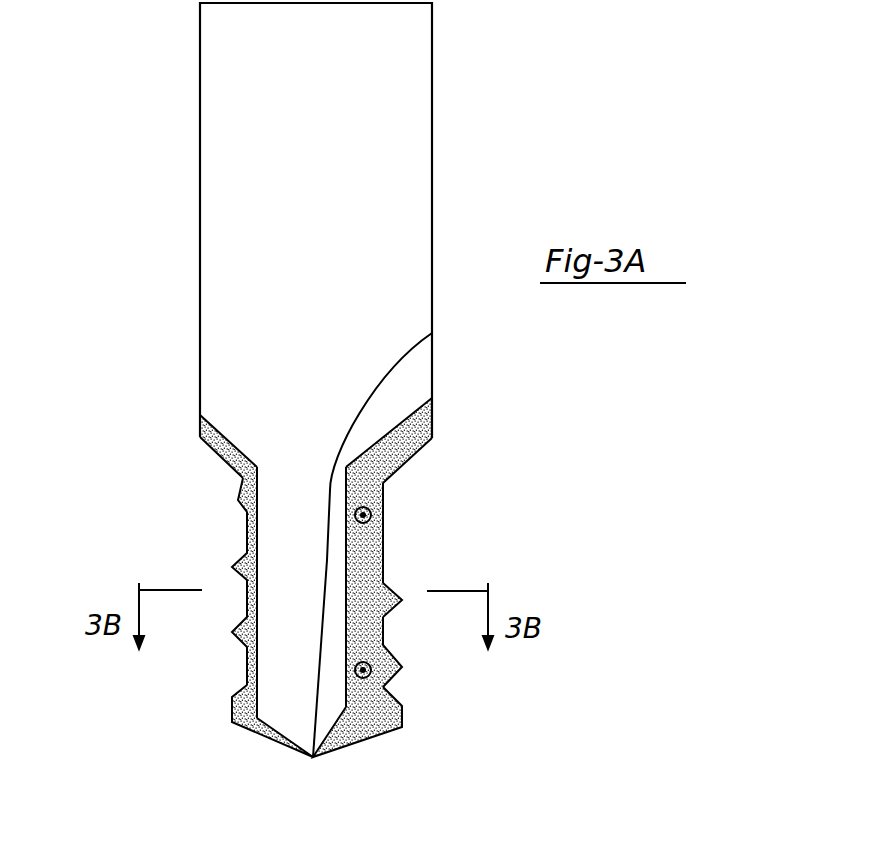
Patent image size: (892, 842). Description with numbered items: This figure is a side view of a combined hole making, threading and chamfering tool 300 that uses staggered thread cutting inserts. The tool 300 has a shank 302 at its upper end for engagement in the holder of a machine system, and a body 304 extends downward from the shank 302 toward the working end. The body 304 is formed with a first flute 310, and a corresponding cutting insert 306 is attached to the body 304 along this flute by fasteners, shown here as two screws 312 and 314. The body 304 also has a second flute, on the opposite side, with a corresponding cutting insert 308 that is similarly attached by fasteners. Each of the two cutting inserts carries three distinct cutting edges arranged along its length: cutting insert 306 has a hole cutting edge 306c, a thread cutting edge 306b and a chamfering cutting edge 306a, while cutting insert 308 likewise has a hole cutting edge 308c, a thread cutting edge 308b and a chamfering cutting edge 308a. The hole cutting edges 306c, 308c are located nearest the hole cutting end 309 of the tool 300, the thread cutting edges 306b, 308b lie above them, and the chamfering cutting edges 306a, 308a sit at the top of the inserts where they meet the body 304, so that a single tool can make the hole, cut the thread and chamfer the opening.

The combined hole making, threading and chamfering tool 300 is at (148, 112).
The shank 302 is at (432, 143).
The body 304 is at (232, 348).
The cutting insert 306 is at (358, 568).
The chamfering cutting edge 306a is at (418, 479).
The thread cutting edge 306b is at (373, 518).
The hole cutting edge 306c is at (373, 737).
The cutting insert 308 is at (240, 531).
The chamfering cutting edge 308a is at (227, 460).
The thread cutting edge 308b is at (237, 500).
The hole cutting edge 308c is at (285, 748).
The hole cutting end 309 is at (313, 757).
The first flute 310 is at (332, 660).
The screw 312 is at (371, 512).
The screw 314 is at (369, 676).